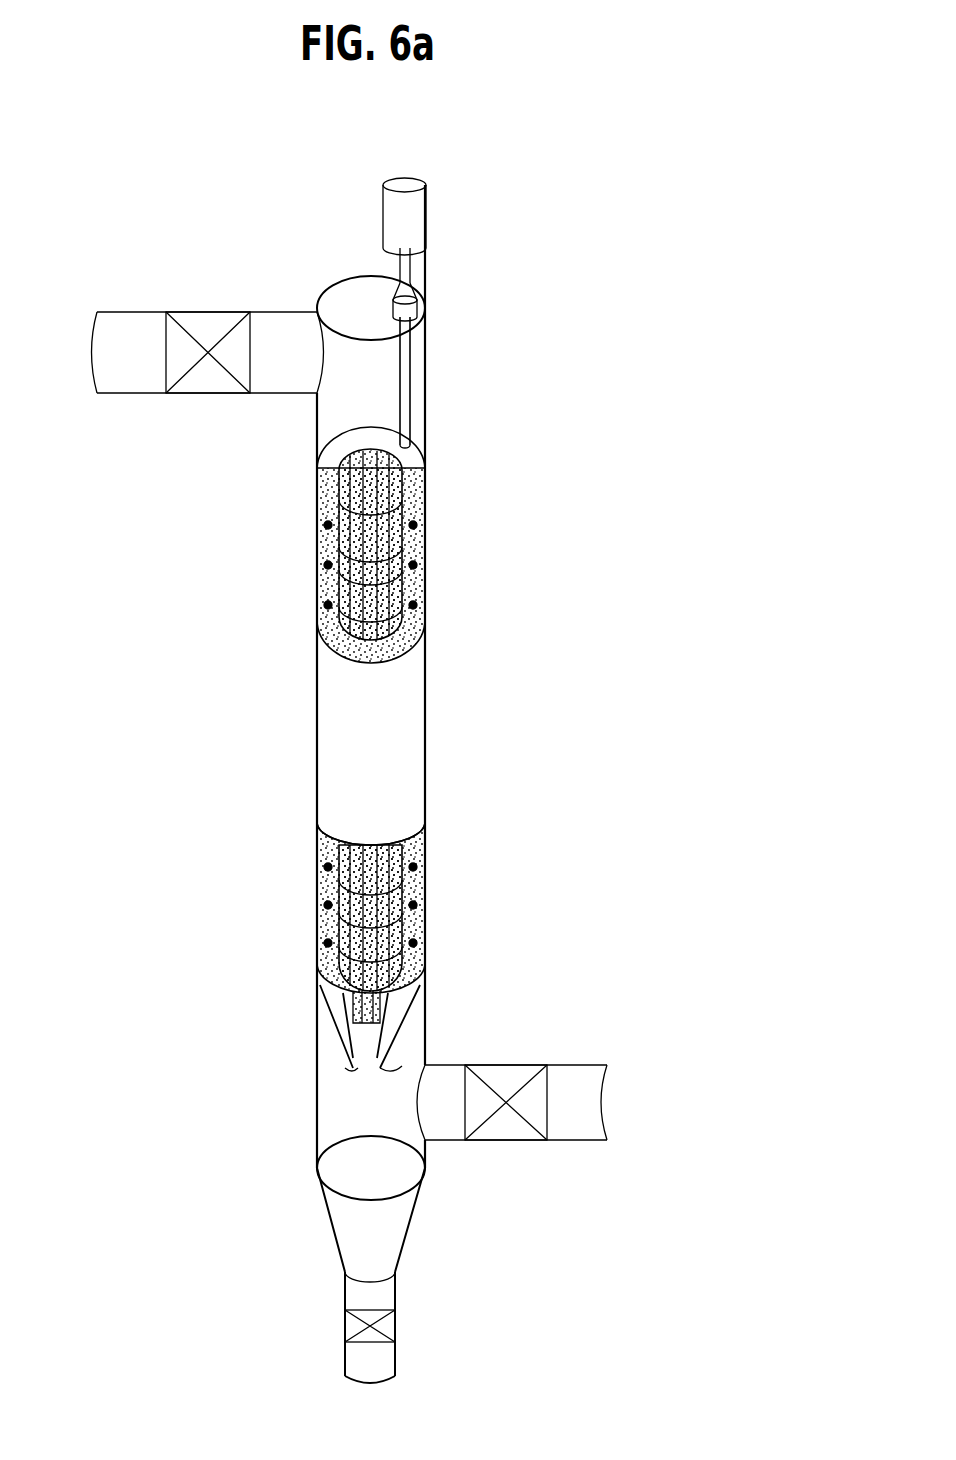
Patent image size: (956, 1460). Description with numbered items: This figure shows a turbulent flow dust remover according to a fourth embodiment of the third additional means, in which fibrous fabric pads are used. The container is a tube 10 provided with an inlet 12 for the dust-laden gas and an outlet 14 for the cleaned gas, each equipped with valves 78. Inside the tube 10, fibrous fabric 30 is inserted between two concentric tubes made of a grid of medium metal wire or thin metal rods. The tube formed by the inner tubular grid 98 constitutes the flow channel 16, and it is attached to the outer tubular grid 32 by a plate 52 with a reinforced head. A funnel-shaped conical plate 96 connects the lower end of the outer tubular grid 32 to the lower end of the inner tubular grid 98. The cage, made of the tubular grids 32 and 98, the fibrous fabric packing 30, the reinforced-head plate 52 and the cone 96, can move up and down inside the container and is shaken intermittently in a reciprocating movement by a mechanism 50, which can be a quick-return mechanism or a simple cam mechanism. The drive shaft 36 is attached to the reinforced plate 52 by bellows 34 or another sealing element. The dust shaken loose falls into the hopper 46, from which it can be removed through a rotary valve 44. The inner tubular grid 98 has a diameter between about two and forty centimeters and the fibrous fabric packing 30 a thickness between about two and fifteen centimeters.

The tube 10 is at (313, 707).
The inlet 12 is at (577, 1085).
The outlet 14 is at (130, 328).
The flow channel 16 is at (402, 458).
The fibrous fabric 30 is at (428, 482).
The outer tubular grid 32 is at (325, 525).
The bellows 34 is at (418, 306).
The drive shaft 36 is at (415, 285).
The rotary valve 44 is at (385, 1328).
The hopper 46 is at (350, 1232).
The mechanism 50 is at (417, 193).
The plate with a reinforced head 52 is at (415, 458).
The valves 78 is at (210, 328).
The funnel-shaped conical plate 96 is at (400, 1017).
The inner tubular grid 98 is at (337, 578).